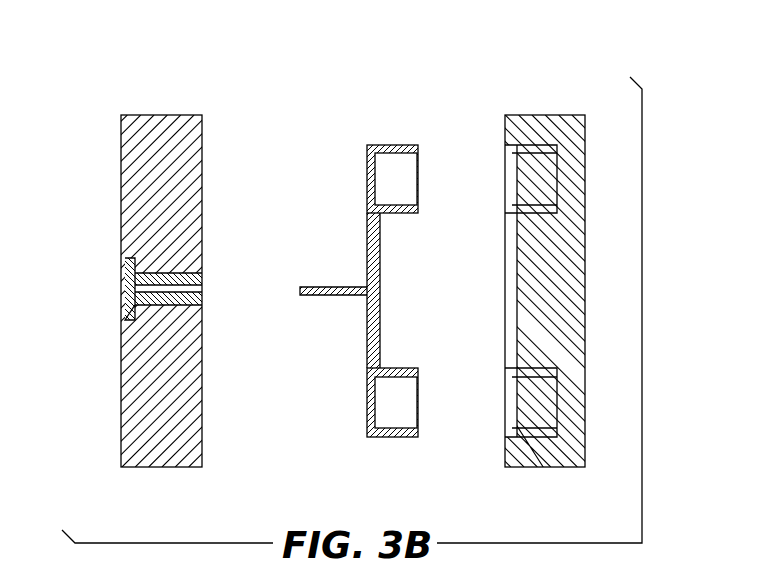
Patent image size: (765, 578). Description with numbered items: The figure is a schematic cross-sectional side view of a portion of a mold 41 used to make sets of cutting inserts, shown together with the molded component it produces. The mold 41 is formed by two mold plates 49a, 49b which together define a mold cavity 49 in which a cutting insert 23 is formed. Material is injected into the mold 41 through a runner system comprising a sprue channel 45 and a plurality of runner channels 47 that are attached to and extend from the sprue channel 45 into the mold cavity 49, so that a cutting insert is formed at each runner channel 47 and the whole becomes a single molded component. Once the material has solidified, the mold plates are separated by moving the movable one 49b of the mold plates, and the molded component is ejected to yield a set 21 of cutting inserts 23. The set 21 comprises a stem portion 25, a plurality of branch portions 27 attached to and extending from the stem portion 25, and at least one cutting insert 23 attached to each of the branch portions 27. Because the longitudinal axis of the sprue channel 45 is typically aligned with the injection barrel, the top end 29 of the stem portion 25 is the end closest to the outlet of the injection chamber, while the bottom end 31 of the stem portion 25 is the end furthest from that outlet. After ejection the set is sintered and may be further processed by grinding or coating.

The set of cutting inserts 21 is at (327, 178).
The cutting insert 23 is at (388, 145).
The stem portion 25 is at (323, 287).
The branch portion 27 is at (367, 250).
The top end of the stem portion 29 is at (299, 293).
The bottom end of the stem portion 31 is at (381, 290).
The mold 41 is at (116, 91).
The sprue channel 45 is at (203, 289).
The runner channel 47 is at (507, 312).
The mold cavity 49 is at (507, 178).
The mold plate 49a is at (171, 115).
The movable mold plate 49b is at (553, 115).